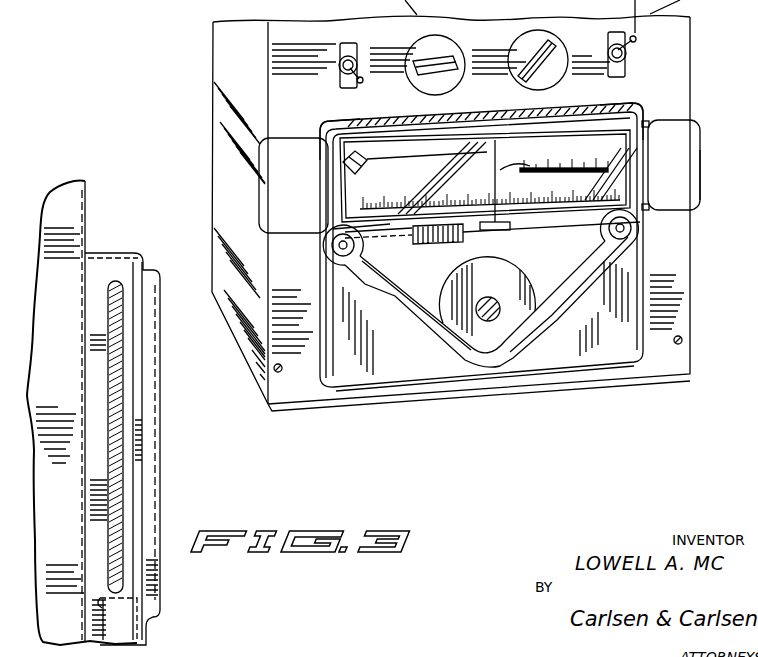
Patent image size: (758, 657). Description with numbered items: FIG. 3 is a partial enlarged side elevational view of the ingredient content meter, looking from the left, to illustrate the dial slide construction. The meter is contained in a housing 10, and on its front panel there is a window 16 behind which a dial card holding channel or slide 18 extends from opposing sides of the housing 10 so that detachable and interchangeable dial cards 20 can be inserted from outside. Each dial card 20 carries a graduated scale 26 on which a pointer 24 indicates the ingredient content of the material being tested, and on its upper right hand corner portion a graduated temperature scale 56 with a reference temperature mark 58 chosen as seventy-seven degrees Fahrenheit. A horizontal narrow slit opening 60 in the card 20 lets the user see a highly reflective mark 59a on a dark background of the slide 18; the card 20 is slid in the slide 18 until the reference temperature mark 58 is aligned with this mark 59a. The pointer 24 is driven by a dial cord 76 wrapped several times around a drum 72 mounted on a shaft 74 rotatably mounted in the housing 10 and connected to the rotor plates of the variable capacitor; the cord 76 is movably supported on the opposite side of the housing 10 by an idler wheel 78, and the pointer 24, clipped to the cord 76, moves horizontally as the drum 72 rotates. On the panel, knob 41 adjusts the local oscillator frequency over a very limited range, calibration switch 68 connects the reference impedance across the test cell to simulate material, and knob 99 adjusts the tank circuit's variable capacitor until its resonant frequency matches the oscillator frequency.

The housing 10 is at (677, 302).
The window 16 is at (350, 203).
The dial card holding channel or slide 18 is at (327, 132).
The dial card 20 is at (701, 196).
The pointer 24 is at (490, 130).
The graduated scale 26 is at (657, 181).
The knob 41 is at (418, 88).
The graduated temperature scale 56 is at (563, 110).
The reference temperature mark 58 is at (583, 130).
The highly reflective mark 59a is at (495, 170).
The horizontal narrow slit opening 60 is at (617, 162).
The calibration switch 68 is at (627, 60).
The drum 72 is at (483, 362).
The shaft 74 is at (500, 318).
The dial cord 76 is at (570, 290).
The idler wheel 78 is at (357, 253).
The knob 99 is at (570, 60).